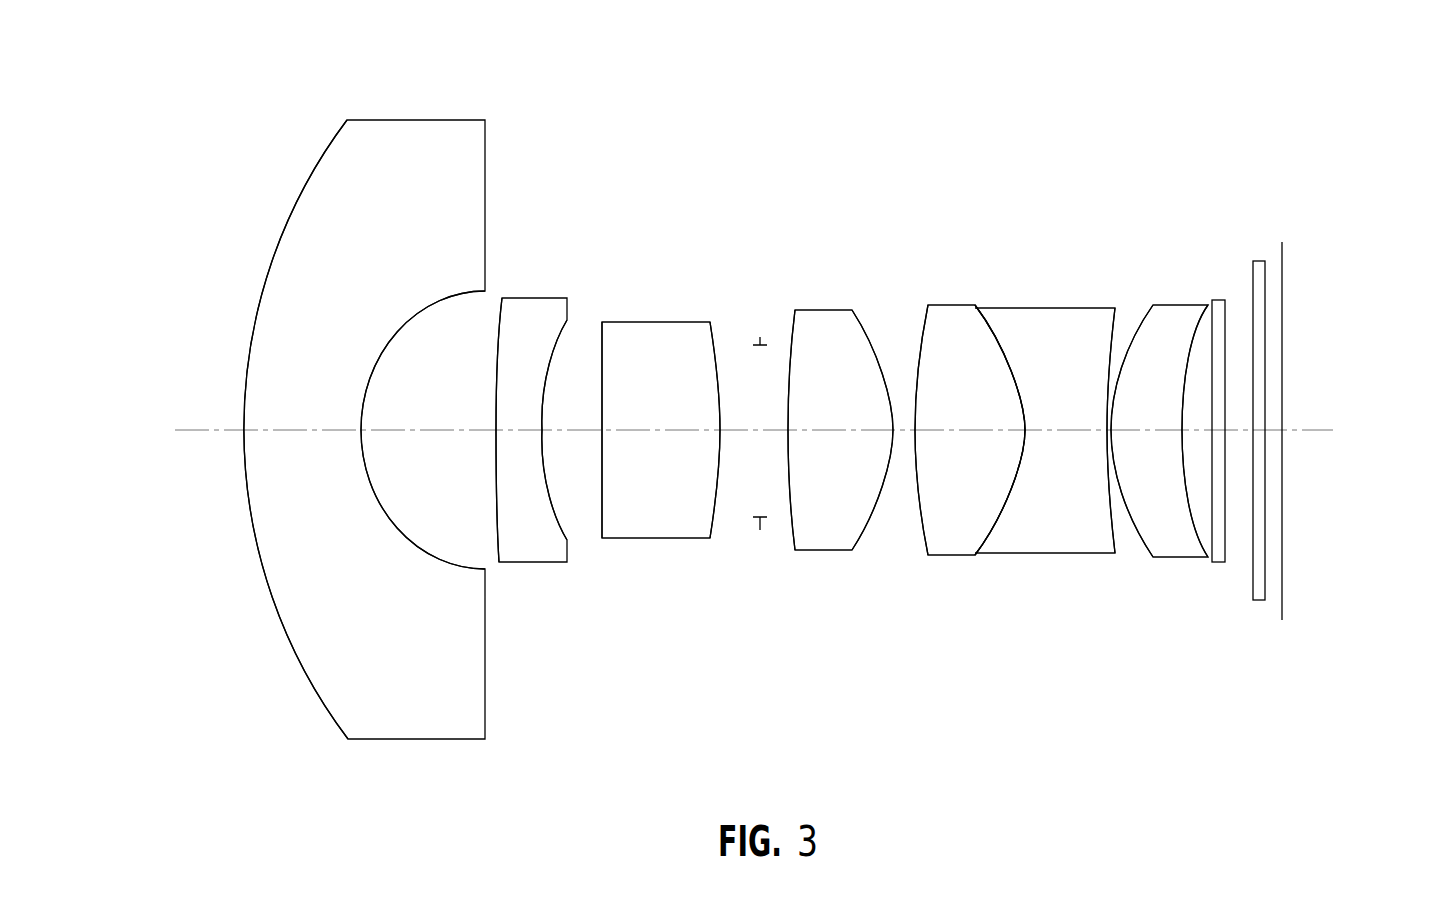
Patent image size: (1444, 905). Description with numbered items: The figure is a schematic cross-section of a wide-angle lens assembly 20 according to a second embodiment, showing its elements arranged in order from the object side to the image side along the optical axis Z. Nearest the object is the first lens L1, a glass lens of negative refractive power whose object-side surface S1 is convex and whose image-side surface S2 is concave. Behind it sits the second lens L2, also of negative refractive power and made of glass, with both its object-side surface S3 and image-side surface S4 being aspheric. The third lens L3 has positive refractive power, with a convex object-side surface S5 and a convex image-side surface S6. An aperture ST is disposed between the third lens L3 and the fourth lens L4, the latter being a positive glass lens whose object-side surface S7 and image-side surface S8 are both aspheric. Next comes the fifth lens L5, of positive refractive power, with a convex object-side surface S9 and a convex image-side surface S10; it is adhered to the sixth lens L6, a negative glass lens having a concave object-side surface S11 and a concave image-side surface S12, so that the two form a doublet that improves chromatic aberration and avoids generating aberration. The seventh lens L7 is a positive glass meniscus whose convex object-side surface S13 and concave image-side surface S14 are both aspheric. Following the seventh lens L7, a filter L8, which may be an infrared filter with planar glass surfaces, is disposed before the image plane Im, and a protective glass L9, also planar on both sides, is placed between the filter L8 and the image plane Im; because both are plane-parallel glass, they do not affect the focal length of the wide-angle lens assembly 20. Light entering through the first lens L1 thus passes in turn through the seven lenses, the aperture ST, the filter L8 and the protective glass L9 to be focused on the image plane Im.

The wide-angle lens assembly 20 is at (222, 165).
The first lens L1 is at (403, 142).
The second lens L2 is at (527, 310).
The third lens L3 is at (673, 332).
The fourth lens L4 is at (827, 330).
The fifth lens L5 is at (960, 327).
The sixth lens L6 is at (1033, 340).
The seventh lens L7 is at (1170, 317).
The filter L8 is at (1220, 297).
The protective glass L9 is at (1257, 262).
The aperture ST is at (758, 337).
The image plane Im is at (1282, 292).
The optical axis Z is at (741, 429).
The object-side surface of the first lens S1 is at (257, 555).
The image-side surface of the first lens S2 is at (408, 540).
The object-side surface of the second lens S3 is at (498, 515).
The image-side surface of the second lens S4 is at (552, 495).
The object-side surface of the third lens S5 is at (602, 498).
The image-side surface of the third lens S6 is at (717, 480).
The object-side surface of the fourth lens S7 is at (788, 470).
The image-side surface of the fourth lens S8 is at (860, 537).
The object-side surface of the fifth lens S9 is at (920, 510).
The image-side surface of the fifth lens S10 is at (992, 540).
The object-side surface of the sixth lens S11 is at (1000, 430).
The image-side surface of the sixth lens S12 is at (1108, 500).
The object-side surface of the seventh lens S13 is at (1125, 510).
The image-side surface of the seventh lens S14 is at (1190, 510).